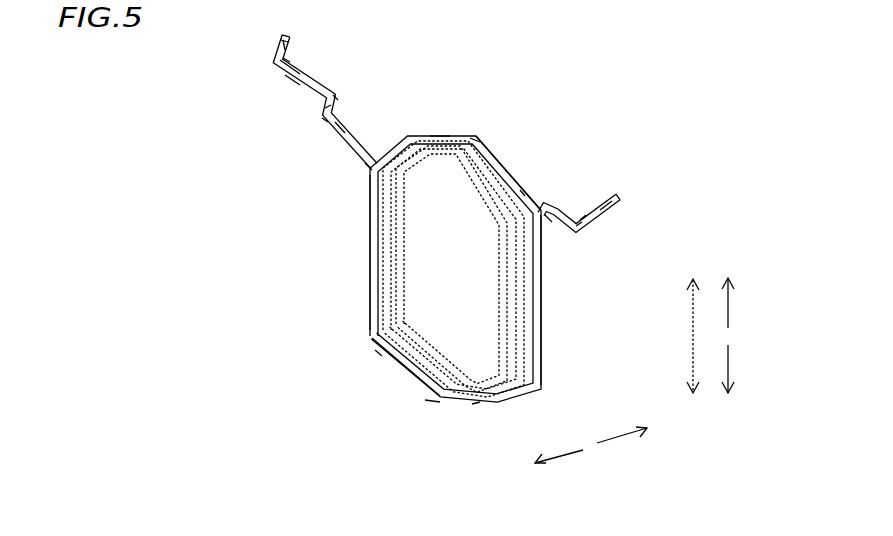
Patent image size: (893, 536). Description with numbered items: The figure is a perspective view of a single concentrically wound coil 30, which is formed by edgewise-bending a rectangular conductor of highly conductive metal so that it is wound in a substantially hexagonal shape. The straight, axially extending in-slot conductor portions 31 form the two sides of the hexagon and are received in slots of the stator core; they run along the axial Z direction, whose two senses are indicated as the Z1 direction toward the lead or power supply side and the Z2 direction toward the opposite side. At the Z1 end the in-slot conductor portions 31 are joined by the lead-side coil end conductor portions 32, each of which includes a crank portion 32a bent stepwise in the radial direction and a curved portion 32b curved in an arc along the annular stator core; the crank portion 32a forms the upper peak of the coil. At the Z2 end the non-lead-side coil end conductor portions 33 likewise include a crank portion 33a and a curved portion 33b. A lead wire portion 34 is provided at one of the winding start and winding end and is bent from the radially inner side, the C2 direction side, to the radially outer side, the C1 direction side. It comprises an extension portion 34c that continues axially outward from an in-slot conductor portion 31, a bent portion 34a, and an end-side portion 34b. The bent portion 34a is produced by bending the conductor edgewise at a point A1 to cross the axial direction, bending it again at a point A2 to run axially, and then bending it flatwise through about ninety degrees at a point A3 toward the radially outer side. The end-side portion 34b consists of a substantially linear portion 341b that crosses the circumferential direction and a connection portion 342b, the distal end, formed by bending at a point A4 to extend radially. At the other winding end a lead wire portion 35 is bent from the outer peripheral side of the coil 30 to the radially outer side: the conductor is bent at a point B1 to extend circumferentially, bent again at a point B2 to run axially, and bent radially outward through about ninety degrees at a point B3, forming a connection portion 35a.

The concentrically wound coil 30 is at (643, 69).
The in-slot conductor portion 31 is at (377, 247).
The lead-side coil end conductor portion 32 is at (504, 168).
The crank portion 32a is at (480, 140).
The curved portion 32b is at (445, 134).
The non-lead-side coil end conductor portion 33 is at (404, 391).
The crank portion 33a is at (431, 403).
The curved portion 33b is at (380, 354).
The lead wire portion 34 is at (340, 90).
The bent portion 34a is at (318, 115).
The end-side portion 34b is at (188, 118).
The extension portion 34c is at (338, 146).
The portion extending to cross the circumferential direction 341b is at (282, 82).
The connection portion 342b is at (281, 42).
The lead wire portion 35 is at (611, 194).
The connection portion 35a is at (622, 190).
The point A1 is at (367, 167).
The point A2 is at (322, 126).
The point A3 is at (340, 120).
The point A4 is at (298, 57).
The point B1 is at (550, 220).
The point B2 is at (588, 222).
The point B3 is at (583, 210).
The C1 direction C1 is at (625, 450).
The C2 direction C2 is at (561, 473).
The Z direction Z is at (701, 336).
The Z1 direction Z1 is at (744, 303).
The Z2 direction Z2 is at (744, 368).